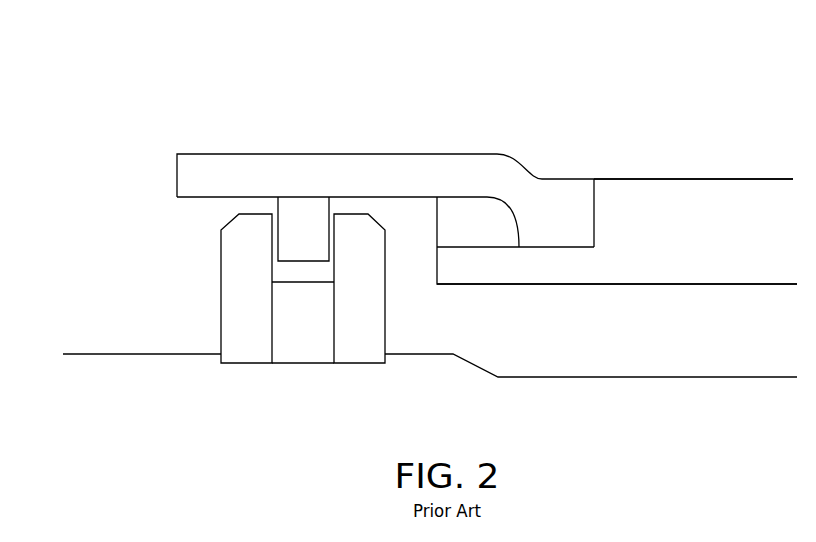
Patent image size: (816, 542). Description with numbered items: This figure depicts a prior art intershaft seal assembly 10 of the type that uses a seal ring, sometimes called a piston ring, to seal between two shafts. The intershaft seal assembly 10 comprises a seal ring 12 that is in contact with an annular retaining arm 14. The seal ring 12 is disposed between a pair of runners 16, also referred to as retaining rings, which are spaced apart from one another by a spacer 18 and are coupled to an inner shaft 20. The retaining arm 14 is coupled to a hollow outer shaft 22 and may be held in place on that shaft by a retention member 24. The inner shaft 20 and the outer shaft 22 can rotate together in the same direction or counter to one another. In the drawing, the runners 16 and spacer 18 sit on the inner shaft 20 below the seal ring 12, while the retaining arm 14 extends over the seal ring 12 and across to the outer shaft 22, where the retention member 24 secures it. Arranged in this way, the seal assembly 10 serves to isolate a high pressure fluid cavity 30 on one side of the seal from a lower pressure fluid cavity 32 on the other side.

The intershaft seal assembly 10 is at (88, 81).
The seal ring 12 is at (285, 239).
The annular retaining arm 14 is at (371, 186).
The runners 16 is at (232, 297).
The spacer 18 is at (290, 336).
The inner shaft 20 is at (453, 414).
The hollow outer shaft 22 is at (668, 241).
The retention member 24 is at (452, 237).
The high pressure fluid cavity 30 is at (127, 274).
The lower pressure fluid cavity 32 is at (509, 337).